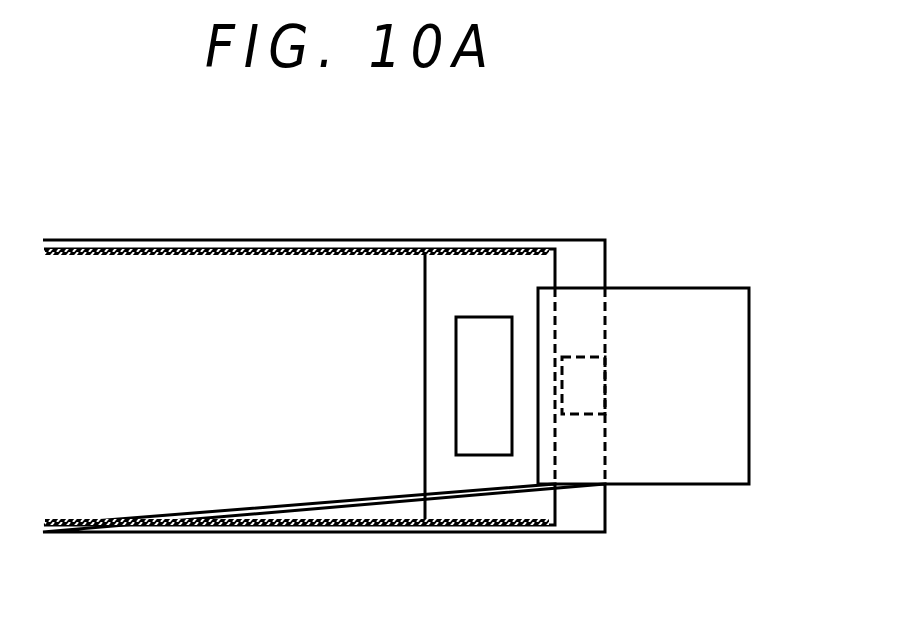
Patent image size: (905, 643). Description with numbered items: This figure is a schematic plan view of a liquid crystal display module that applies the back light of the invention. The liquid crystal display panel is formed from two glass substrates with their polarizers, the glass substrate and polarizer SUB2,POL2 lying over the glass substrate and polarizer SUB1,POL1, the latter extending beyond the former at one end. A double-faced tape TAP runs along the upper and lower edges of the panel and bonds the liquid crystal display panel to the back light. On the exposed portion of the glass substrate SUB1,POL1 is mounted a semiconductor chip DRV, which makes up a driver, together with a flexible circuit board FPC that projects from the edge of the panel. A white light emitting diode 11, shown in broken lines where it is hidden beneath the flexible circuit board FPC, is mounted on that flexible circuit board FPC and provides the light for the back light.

The double-faced tape TAP is at (133, 247).
The glass substrate and polarizer SUB2,POL2 is at (228, 292).
The glass substrate and polarizer SUB1,POL1 is at (462, 288).
The semiconductor chip DRV is at (487, 338).
The white light emitting diode 11 is at (598, 380).
The flexible circuit board FPC is at (713, 338).